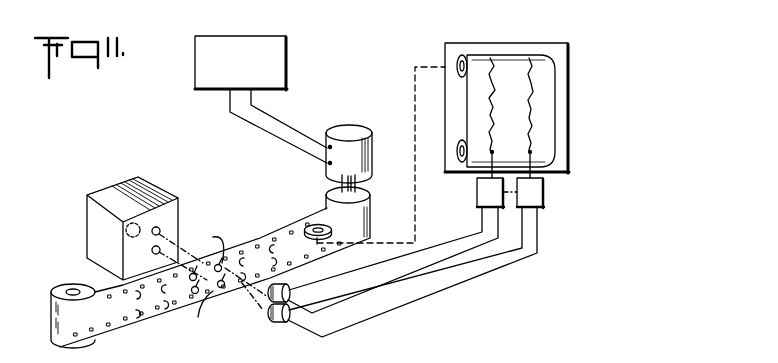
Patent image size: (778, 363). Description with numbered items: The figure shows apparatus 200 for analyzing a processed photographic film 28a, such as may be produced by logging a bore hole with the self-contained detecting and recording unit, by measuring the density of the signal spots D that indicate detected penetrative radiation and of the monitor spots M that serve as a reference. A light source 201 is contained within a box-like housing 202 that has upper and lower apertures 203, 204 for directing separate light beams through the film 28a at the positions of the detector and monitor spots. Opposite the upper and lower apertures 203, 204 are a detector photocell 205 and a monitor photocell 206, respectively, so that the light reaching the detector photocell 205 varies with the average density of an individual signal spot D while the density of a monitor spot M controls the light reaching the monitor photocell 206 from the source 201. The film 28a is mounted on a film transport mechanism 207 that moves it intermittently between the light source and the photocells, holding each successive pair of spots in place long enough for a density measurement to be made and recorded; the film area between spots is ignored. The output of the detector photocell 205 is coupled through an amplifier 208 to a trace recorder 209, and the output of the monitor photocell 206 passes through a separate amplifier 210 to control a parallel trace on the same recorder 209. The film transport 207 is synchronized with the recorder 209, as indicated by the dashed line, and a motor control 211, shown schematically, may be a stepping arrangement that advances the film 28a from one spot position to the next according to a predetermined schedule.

The apparatus 200 is at (210, 235).
The light source 201 is at (168, 192).
The box-like housing 202 is at (118, 190).
The upper aperture 203 is at (160, 230).
The lower aperture 204 is at (160, 249).
The detector photocell 205 is at (282, 283).
The monitor photocell 206 is at (268, 322).
The film transport mechanism 207 is at (400, 181).
The amplifier 208 is at (483, 192).
The trace recorder 209 is at (568, 70).
The amplifier 210 is at (533, 197).
The motor control 211 is at (246, 33).
The processed photographic film 28a is at (283, 224).